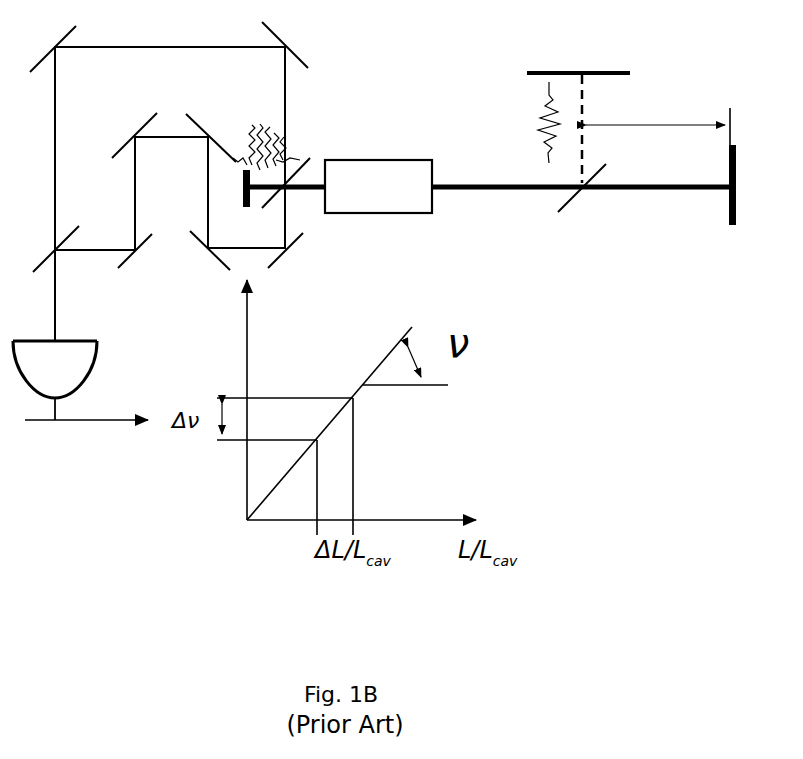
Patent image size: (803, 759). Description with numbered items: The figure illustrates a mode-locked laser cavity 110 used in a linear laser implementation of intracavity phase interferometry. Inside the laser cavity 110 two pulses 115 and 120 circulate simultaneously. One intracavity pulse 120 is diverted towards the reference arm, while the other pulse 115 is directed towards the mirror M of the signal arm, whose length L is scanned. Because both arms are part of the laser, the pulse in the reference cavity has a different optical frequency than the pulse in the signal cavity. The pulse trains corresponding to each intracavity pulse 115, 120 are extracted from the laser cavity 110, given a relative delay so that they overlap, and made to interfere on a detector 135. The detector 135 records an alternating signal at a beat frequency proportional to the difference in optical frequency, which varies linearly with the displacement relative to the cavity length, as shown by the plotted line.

The mode-locked laser cavity 110 is at (556, 251).
The pulse 115 is at (533, 122).
The pulse 120 is at (275, 128).
The detector 135 is at (92, 348).